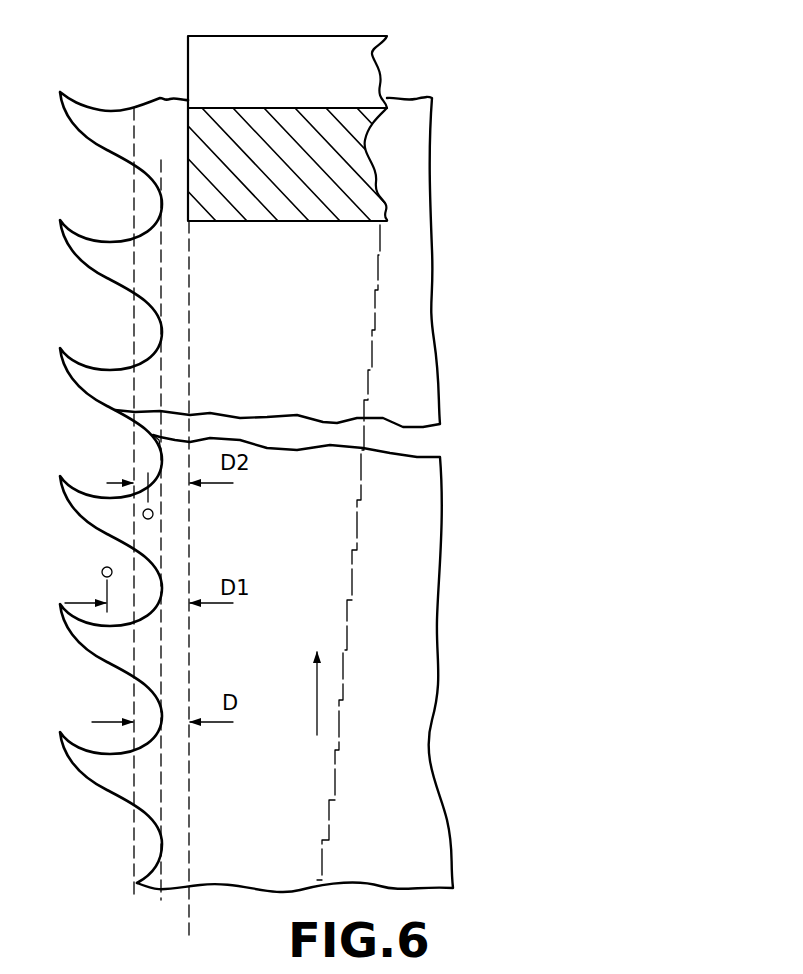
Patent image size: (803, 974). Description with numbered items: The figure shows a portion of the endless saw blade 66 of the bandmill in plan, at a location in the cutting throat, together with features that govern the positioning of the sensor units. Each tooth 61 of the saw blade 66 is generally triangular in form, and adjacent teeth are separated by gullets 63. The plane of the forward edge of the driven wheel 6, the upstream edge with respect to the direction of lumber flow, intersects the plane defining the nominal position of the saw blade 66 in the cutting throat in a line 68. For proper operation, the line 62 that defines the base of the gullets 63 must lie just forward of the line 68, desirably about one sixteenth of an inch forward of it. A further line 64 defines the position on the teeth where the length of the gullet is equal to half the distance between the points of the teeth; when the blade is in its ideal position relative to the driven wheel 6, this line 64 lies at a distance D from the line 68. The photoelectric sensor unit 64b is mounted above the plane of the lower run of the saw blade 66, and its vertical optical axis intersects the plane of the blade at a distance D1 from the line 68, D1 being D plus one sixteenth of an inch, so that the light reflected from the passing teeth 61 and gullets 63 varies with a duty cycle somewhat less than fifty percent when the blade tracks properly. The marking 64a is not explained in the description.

The driven wheel 6 is at (372, 52).
The tooth 61 is at (105, 645).
The line defining the base of the gullets 62 is at (163, 775).
The gullet 63 is at (82, 577).
The line defining the position on the teeth where gullet length equals half the toot 64 is at (130, 867).
The tip position 64a is at (107, 565).
The sensor unit 64b is at (153, 513).
The saw blade 66 is at (428, 803).
The line 68 is at (190, 678).